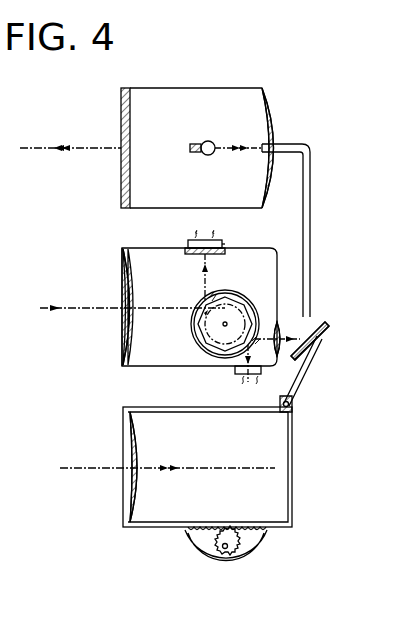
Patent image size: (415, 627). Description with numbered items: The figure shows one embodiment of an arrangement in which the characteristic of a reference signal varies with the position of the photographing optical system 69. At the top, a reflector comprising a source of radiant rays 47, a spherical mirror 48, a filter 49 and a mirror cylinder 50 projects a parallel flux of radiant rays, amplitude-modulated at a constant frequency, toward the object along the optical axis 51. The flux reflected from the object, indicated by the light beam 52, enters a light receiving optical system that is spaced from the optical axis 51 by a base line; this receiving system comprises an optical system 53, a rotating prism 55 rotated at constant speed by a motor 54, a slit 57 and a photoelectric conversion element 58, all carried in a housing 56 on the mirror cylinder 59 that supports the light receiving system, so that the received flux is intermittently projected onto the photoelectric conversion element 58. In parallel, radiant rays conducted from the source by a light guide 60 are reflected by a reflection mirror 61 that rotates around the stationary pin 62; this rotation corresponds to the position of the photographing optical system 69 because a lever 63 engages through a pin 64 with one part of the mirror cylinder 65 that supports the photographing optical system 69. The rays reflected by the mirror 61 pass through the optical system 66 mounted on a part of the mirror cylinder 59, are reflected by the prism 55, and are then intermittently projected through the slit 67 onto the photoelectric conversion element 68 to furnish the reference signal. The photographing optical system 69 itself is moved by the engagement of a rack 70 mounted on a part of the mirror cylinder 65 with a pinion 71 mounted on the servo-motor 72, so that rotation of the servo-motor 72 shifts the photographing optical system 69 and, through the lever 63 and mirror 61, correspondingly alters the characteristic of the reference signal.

The source of radiant rays 47 is at (212, 140).
The spherical mirror 48 is at (281, 102).
The filter 49 is at (121, 105).
The mirror cylinder 50 is at (190, 88).
The optical axis 51 is at (100, 147).
The light beam 52 is at (86, 305).
The optical system 53 is at (122, 345).
The motor 54 is at (200, 336).
The rotating prism 55 is at (224, 298).
The housing 56 is at (228, 253).
The slit 57 is at (187, 242).
The photoelectric conversion element 58 is at (221, 242).
The mirror cylinder 59 is at (128, 248).
The light guide 60 is at (312, 170).
The reflection mirror 61 is at (330, 330).
The stationary pin 62 is at (312, 344).
The lever 63 is at (305, 378).
The pin 64 is at (293, 406).
The mirror cylinder 65 is at (255, 412).
The optical system 66 is at (282, 324).
The slit 67 is at (270, 367).
The photoelectric conversion element 68 is at (235, 373).
The photographing optical system 69 is at (122, 447).
The rack 70 is at (270, 534).
The pinion 71 is at (232, 556).
The servo-motor 72 is at (256, 564).